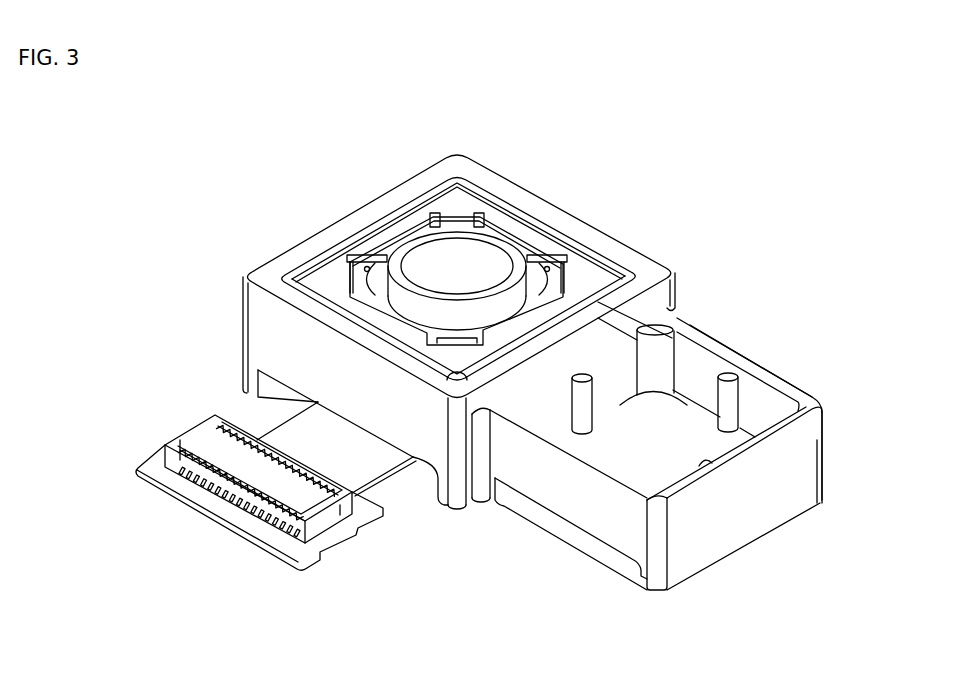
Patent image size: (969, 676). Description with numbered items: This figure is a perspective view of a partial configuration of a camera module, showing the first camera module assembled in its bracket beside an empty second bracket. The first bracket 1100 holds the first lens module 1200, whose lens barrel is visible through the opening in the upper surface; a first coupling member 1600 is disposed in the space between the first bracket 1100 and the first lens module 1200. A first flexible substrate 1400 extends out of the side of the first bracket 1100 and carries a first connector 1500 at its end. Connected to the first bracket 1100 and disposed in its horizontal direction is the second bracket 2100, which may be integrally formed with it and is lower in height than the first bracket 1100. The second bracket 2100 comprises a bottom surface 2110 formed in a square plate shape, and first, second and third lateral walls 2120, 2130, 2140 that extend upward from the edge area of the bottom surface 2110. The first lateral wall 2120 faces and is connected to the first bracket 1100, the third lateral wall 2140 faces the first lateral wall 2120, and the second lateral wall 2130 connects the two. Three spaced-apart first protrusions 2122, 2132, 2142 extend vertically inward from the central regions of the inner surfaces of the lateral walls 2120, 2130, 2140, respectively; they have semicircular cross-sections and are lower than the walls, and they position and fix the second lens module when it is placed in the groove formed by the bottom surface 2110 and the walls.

The first bracket 1100 is at (297, 247).
The first lens module 1200 is at (468, 197).
The first flexible substrate 1400 is at (295, 430).
The first connector 1500 is at (212, 505).
The first coupling member 1600 is at (430, 200).
The second bracket 2100 is at (750, 526).
The bottom surface 2110 is at (590, 522).
The first lateral wall 2120 is at (610, 357).
The first protrusion 2122 is at (577, 403).
The second lateral wall 2130 is at (782, 380).
The first protrusion 2132 is at (725, 373).
The third lateral wall 2140 is at (825, 447).
The first protrusion 2142 is at (712, 462).